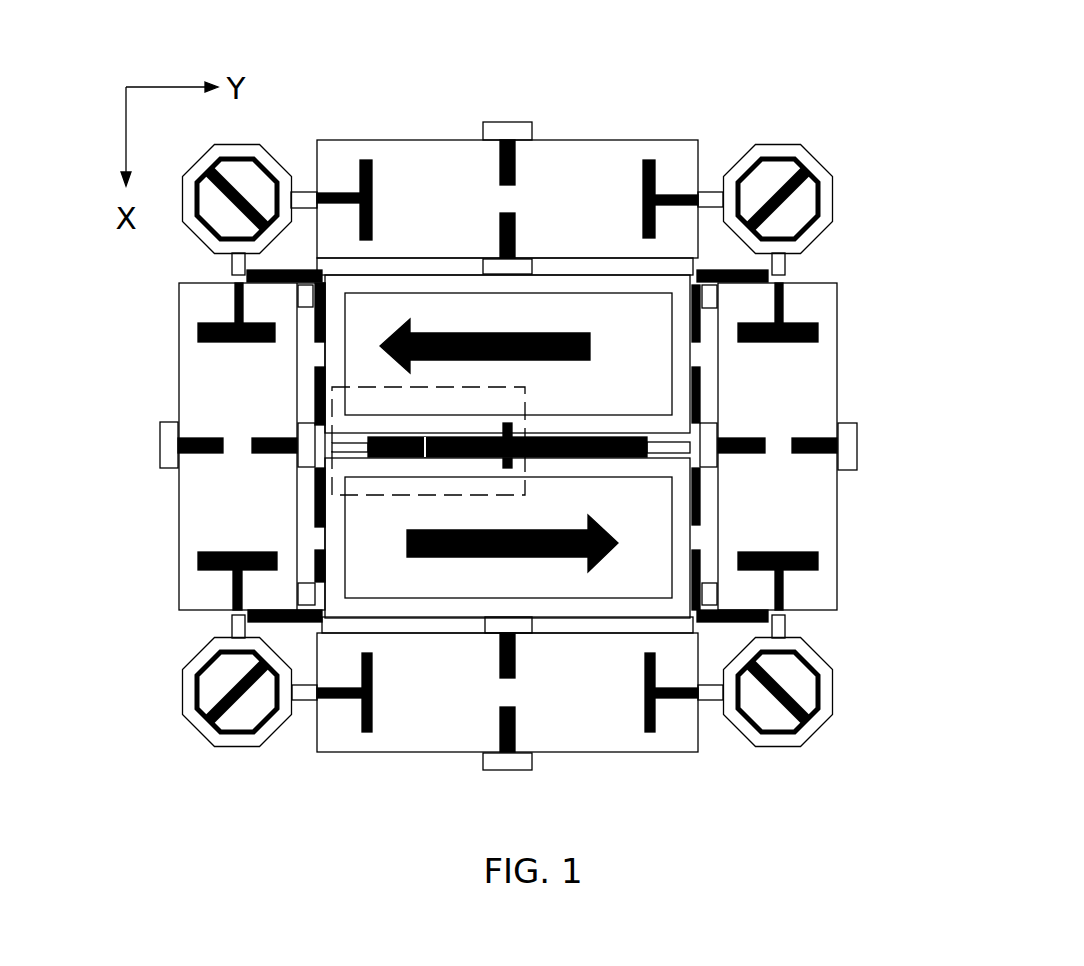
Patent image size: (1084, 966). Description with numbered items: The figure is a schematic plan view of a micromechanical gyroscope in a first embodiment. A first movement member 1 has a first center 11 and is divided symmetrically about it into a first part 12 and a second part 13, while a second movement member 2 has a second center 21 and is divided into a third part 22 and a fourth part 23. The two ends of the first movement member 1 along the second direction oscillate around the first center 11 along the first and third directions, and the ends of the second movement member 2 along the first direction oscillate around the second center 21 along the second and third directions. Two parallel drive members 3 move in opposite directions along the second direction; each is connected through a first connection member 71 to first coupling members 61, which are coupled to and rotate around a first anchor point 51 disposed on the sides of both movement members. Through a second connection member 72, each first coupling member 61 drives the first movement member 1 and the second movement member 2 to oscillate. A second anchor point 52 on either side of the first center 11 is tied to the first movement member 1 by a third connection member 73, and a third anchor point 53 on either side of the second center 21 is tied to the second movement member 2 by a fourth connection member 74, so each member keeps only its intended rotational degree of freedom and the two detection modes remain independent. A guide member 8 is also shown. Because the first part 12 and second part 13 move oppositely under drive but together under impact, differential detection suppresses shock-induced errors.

The first movement member 1 is at (604, 416).
The first center 11 is at (512, 200).
The first part 12 is at (457, 192).
The second part 13 is at (747, 205).
The second movement member 2 is at (502, 446).
The second center 21 is at (511, 498).
The third part 22 is at (210, 390).
The fourth part 23 is at (210, 527).
The drive member 3 is at (452, 318).
The guide member 8 is at (404, 446).
The first anchor point 51 is at (547, 446).
The second anchor point 52 is at (507, 692).
The third anchor point 53 is at (848, 448).
The first coupling member 61 is at (805, 240).
The first connection member 71 is at (715, 272).
The second connection member 72 is at (678, 195).
The third connection member 73 is at (500, 662).
The fourth connection member 74 is at (817, 455).